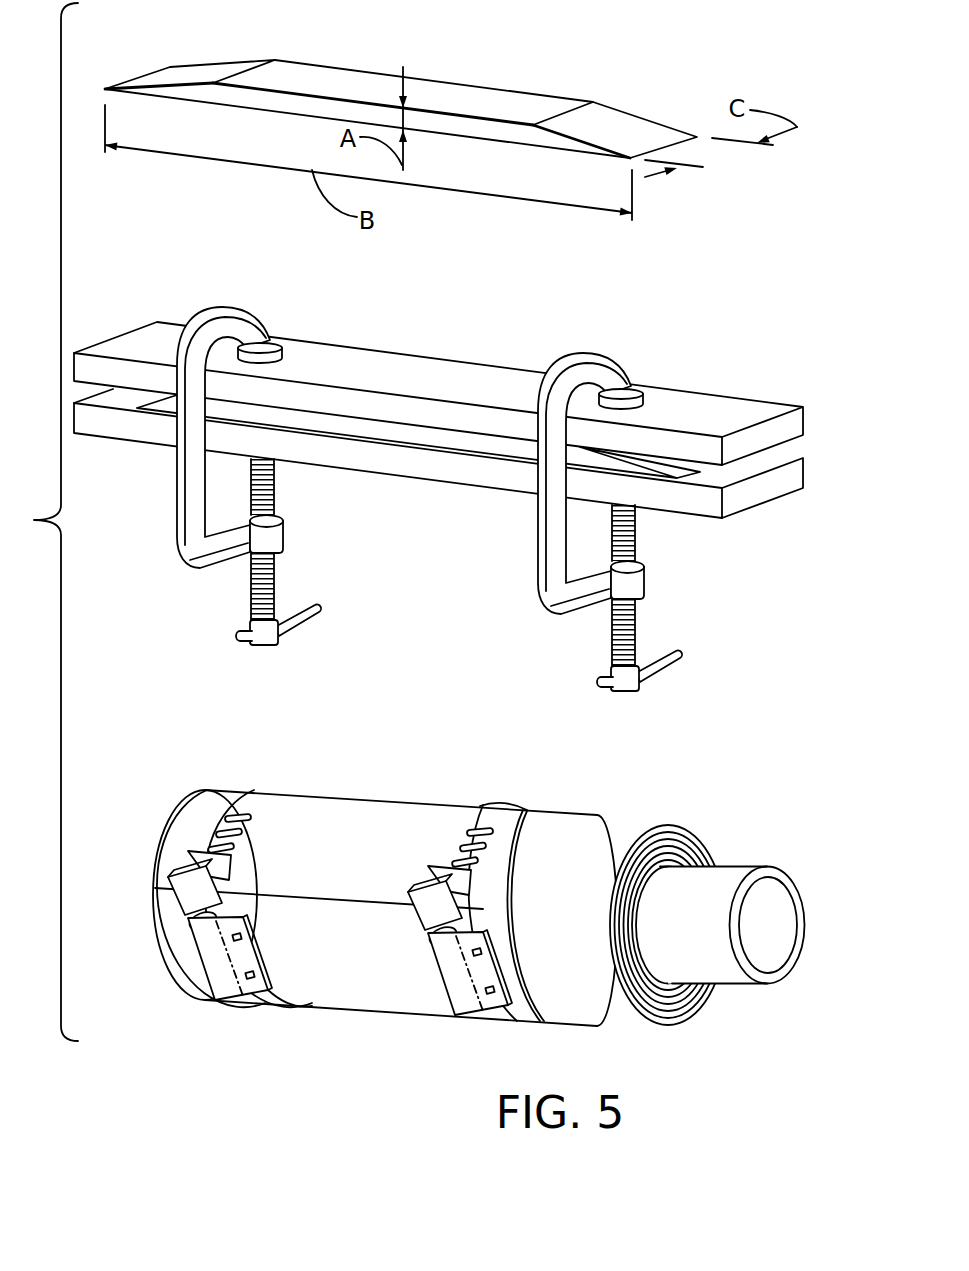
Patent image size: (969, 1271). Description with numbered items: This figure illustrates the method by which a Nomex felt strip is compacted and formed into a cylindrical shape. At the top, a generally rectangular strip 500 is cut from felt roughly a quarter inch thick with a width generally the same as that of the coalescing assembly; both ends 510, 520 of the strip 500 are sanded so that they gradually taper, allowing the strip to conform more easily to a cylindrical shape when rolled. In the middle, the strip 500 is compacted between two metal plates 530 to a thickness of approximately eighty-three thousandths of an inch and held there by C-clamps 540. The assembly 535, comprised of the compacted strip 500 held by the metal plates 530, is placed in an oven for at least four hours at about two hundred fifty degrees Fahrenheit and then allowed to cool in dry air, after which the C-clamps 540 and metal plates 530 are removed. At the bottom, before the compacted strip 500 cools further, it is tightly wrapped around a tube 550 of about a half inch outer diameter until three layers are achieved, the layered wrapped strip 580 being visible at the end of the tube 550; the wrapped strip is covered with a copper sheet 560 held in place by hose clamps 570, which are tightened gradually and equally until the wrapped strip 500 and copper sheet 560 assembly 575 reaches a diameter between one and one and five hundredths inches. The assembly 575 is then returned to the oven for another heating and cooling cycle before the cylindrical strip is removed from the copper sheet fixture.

The strip 500 is at (405, 272).
The end of strip 510 is at (197, 72).
The end of strip 520 is at (607, 118).
The metal plate 530 is at (455, 367).
The assembly 535 is at (180, 294).
The C-clamp 540 is at (255, 643).
The tube 550 is at (730, 880).
The copper sheet 560 is at (520, 820).
The hose clamp 570 is at (230, 1005).
The assembly 575 is at (185, 760).
The coiled insulation wrap 580 is at (635, 820).